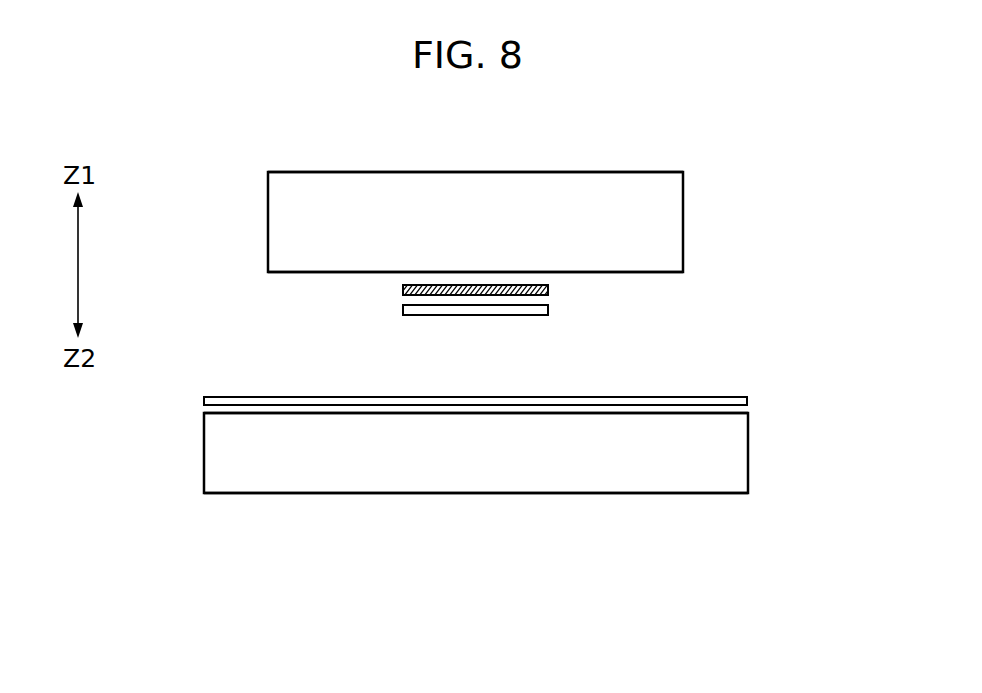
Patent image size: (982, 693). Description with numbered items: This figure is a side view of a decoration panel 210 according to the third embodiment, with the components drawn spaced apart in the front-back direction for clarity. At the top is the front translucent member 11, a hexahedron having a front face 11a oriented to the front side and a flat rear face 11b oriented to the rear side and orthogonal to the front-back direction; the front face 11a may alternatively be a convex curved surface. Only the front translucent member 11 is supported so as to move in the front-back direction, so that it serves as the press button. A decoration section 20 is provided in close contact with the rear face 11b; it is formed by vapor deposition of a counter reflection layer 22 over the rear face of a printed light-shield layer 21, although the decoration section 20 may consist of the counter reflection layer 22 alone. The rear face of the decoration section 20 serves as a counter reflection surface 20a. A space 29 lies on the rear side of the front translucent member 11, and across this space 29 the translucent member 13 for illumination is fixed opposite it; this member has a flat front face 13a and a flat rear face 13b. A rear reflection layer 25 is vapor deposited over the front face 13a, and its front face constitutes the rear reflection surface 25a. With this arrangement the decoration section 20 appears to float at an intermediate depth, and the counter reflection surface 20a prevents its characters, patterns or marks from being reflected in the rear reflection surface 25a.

The decoration panel 210 is at (775, 163).
The front translucent member 11 is at (684, 233).
The front face 11a is at (312, 172).
The rear face 11b is at (293, 273).
The translucent member for illumination 13 is at (748, 440).
The front face 13a is at (688, 412).
The rear face 13b is at (583, 496).
The decoration section 20 is at (461, 336).
The counter reflection surface 20a is at (508, 317).
The light-shield layer 21 is at (403, 289).
The counter reflection layer 22 is at (402, 308).
The rear reflection layer 25 is at (203, 400).
The rear reflection surface 25a is at (383, 398).
The space 29 is at (761, 272).